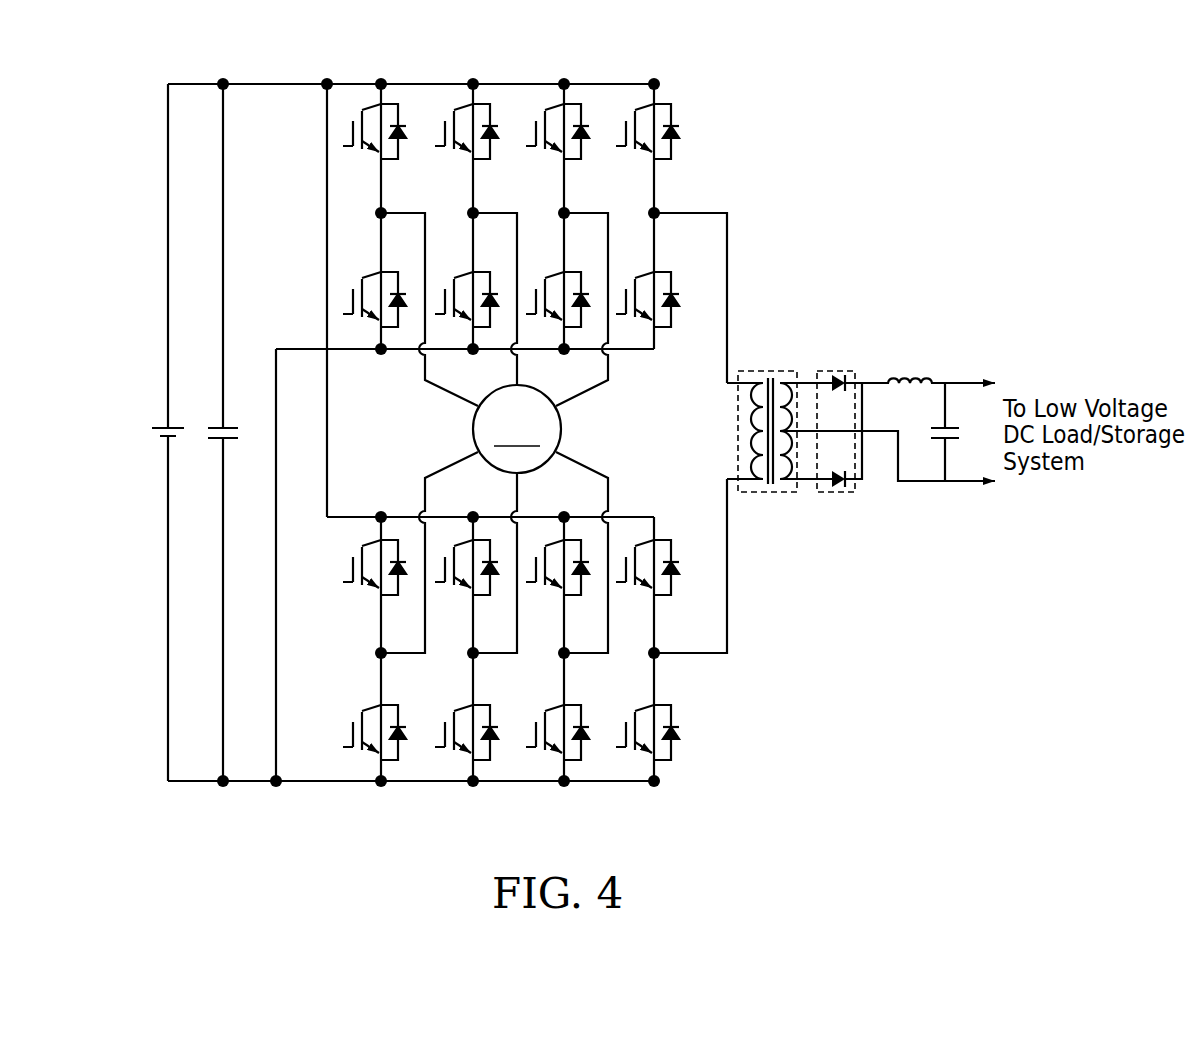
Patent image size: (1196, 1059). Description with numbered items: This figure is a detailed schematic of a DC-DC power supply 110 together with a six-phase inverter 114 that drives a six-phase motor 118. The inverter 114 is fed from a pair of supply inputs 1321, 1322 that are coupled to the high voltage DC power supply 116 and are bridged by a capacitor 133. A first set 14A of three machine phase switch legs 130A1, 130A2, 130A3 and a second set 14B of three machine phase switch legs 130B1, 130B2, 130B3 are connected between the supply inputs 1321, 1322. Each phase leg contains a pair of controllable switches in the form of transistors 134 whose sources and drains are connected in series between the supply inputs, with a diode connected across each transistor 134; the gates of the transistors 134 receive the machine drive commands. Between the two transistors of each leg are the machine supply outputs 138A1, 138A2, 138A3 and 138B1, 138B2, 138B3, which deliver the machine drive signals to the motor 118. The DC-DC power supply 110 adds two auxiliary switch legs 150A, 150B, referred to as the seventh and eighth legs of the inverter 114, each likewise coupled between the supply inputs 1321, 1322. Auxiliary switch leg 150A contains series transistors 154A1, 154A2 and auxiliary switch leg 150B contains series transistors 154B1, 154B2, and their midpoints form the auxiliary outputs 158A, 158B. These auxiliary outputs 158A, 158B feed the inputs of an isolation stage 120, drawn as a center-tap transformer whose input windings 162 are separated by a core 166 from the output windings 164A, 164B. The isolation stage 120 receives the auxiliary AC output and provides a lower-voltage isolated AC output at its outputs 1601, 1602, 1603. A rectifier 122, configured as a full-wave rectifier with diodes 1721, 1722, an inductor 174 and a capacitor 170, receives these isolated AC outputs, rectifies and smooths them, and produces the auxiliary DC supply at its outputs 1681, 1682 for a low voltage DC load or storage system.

The supply input 1321 is at (188, 82).
The supply input 1322 is at (190, 786).
The high voltage DC power supply 116 is at (164, 437).
The capacitor 133 is at (228, 426).
The 6-phase inverter 114 is at (207, 432).
The first set of machine phase switch circuits 14A is at (432, 208).
The second set of machine phase switch circuits 14B is at (431, 677).
The machine phase switch leg 130A1 is at (371, 100).
The machine phase switch leg 130A2 is at (462, 100).
The machine phase switch leg 130A3 is at (553, 100).
The auxiliary switch leg 150A is at (643, 100).
The machine phase switch leg 130B1 is at (370, 766).
The machine phase switch leg 130B2 is at (462, 766).
The machine phase switch leg 130B3 is at (553, 766).
The auxiliary switch leg 150B is at (643, 766).
The transistor 134 is at (382, 278).
The transistor 154A1 is at (669, 120).
The transistor 154A2 is at (653, 325).
The transistor 154B1 is at (671, 726).
The transistor 154B2 is at (657, 598).
The 6-phase motor 118 is at (517, 429).
The machine supply output 138A1 is at (472, 405).
The machine supply output 138A2 is at (517, 369).
The machine supply output 138A3 is at (594, 398).
The machine supply output 138B1 is at (445, 465).
The machine supply output 138B2 is at (517, 494).
The machine supply output 138B3 is at (604, 468).
The DC-DC power supply 110 is at (739, 406).
The auxiliary output 158A is at (727, 262).
The auxiliary output 158B is at (727, 590).
The isolation stage 120 is at (750, 427).
The input windings 162 is at (746, 387).
The core 166 is at (762, 491).
The output winding 164A is at (789, 381).
The output winding 164B is at (790, 492).
The output of isolation stage 1601 is at (817, 380).
The output of isolation stage 1602 is at (818, 490).
The output of isolation stage 1603 is at (858, 480).
The rectifier 122 is at (894, 418).
The diode 1721 is at (859, 372).
The diode 1722 is at (842, 488).
The inductor 174 is at (942, 380).
The capacitor 170 is at (940, 427).
The output of rectifier 1681 is at (962, 382).
The output of rectifier 1682 is at (962, 487).